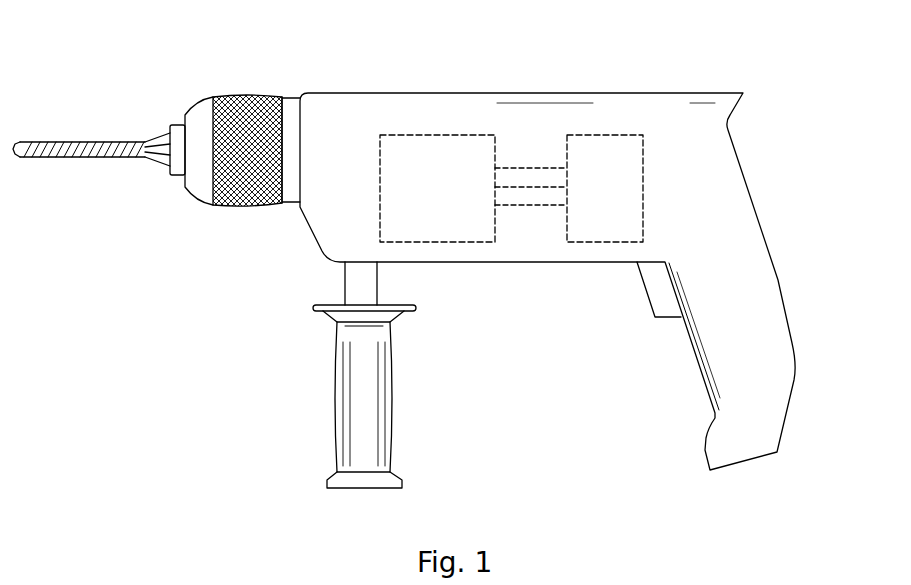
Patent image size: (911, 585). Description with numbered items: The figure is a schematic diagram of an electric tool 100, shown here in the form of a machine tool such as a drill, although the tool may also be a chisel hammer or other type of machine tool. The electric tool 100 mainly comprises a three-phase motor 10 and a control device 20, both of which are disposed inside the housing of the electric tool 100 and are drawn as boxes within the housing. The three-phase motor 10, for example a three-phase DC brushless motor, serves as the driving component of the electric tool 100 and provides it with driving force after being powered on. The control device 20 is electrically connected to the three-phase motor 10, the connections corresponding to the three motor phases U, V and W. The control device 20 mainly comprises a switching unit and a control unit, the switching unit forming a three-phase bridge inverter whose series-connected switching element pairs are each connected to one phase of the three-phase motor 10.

The three-phase motor 10 is at (430, 145).
The control device 20 is at (600, 145).
The electric tool 100 is at (798, 266).